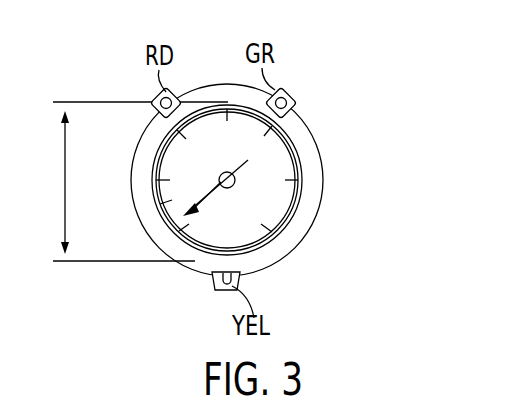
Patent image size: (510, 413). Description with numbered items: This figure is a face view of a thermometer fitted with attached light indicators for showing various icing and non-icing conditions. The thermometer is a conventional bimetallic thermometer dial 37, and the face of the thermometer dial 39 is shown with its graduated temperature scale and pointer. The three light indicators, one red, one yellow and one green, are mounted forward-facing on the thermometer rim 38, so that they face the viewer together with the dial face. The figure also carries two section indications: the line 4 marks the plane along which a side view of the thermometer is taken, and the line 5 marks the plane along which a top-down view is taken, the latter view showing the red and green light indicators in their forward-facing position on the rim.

The thermometer dial 37 is at (326, 115).
The thermometer rim 38 is at (320, 160).
The thermometer dial 39 is at (166, 194).
The section line 4— 4 is at (296, 69).
The section line 5— 5 is at (118, 17).